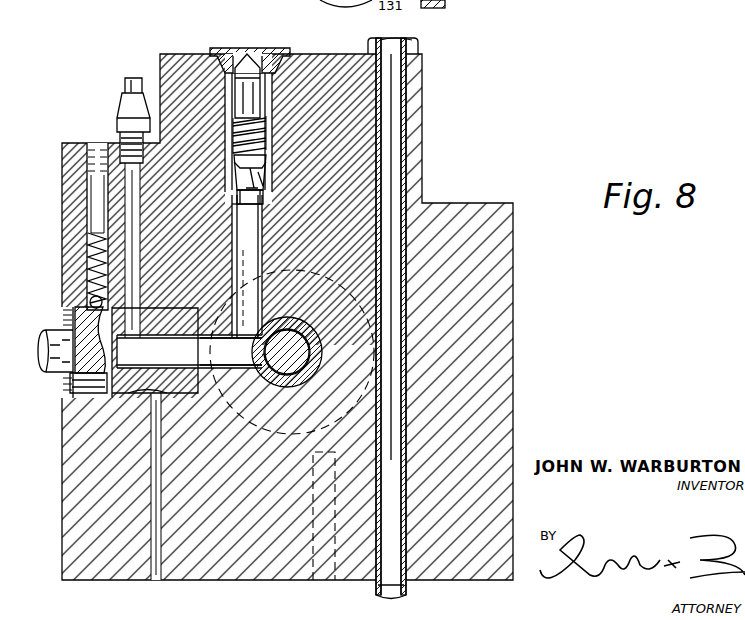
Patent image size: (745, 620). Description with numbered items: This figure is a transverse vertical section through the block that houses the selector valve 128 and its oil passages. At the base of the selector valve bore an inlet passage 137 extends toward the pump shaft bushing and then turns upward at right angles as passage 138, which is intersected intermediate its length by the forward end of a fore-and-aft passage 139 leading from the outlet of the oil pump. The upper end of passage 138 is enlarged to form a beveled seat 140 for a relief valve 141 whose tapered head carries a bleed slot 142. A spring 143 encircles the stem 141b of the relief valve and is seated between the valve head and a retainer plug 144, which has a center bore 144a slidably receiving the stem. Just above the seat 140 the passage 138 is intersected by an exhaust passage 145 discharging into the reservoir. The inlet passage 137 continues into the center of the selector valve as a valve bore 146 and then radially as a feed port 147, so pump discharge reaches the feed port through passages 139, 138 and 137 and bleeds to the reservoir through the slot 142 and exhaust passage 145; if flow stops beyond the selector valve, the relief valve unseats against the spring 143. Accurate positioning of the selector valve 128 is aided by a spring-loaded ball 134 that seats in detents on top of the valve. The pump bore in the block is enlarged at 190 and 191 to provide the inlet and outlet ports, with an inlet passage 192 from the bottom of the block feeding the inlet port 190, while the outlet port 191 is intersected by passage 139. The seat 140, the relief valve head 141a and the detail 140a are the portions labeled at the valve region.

The selector valve 128 is at (72, 373).
The spring-loaded ball 134 is at (90, 300).
The inlet passage 137 is at (244, 366).
The passage 138 is at (265, 308).
The fore-and-aft passage 139 is at (248, 228).
The beveled seat 140 is at (234, 183).
The valve seat opening 140a is at (270, 178).
The relief valve 141 is at (222, 160).
The valve member stem 141a is at (273, 163).
The stem 141b is at (247, 98).
The bleed slot 142 is at (237, 198).
The spring 143 is at (232, 134).
The retainer plug 144 is at (232, 50).
The center bore 144a is at (282, 53).
The exhaust passage 145 is at (234, 168).
The valve bore 146 is at (170, 363).
The feed port 147 is at (130, 322).
The inlet port 190 is at (369, 470).
The outlet port 191 is at (300, 243).
The inlet passage 192 is at (312, 581).